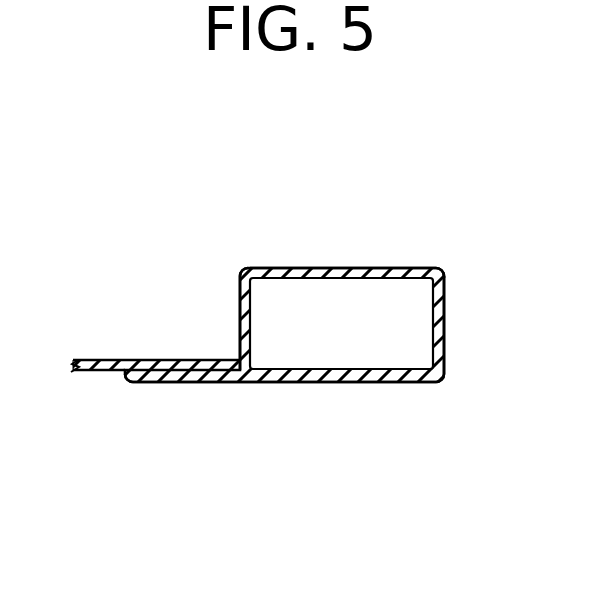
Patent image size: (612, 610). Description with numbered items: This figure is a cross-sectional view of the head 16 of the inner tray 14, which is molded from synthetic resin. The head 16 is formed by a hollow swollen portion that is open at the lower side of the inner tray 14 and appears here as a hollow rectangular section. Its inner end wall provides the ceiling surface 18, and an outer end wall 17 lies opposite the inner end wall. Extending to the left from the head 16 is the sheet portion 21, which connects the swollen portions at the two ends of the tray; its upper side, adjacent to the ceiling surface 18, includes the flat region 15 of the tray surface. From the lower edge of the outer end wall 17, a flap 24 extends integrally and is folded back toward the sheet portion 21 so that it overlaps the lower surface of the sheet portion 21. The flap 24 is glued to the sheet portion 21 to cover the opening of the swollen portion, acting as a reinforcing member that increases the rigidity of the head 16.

The inner tray 14 is at (393, 408).
The head 16 is at (352, 268).
The outer end wall 17 is at (445, 312).
The ceiling surface 18 is at (240, 321).
The flap 24 is at (315, 382).
The sheet portion 21 is at (103, 359).
The flat region 15 is at (156, 365).